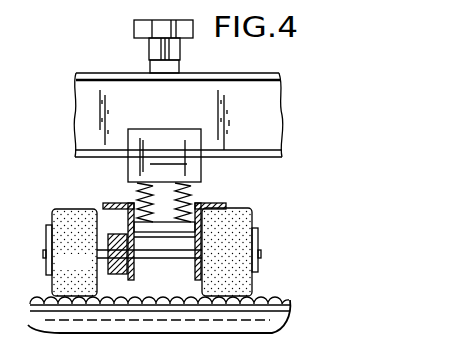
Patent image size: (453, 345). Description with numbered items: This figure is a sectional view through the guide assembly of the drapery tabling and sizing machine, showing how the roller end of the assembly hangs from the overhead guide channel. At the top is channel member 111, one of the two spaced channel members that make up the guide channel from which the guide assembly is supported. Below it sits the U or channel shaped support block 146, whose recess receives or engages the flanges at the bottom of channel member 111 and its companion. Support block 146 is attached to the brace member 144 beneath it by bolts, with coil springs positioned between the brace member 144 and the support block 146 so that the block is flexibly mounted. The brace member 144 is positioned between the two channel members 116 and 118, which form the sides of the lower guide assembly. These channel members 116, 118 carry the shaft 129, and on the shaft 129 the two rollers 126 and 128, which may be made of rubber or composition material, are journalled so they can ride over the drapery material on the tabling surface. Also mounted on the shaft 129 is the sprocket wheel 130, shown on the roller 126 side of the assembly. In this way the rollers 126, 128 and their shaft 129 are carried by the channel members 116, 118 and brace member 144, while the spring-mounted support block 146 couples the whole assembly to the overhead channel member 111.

The channel member 111 is at (277, 73).
The channel member 116 is at (115, 203).
The channel member 118 is at (210, 203).
The roller 126 is at (66, 210).
The roller 128 is at (247, 212).
The shaft 129 is at (160, 254).
The sprocket wheel 130 is at (97, 269).
The brace member 144 is at (180, 235).
The support block 146 is at (164, 155).